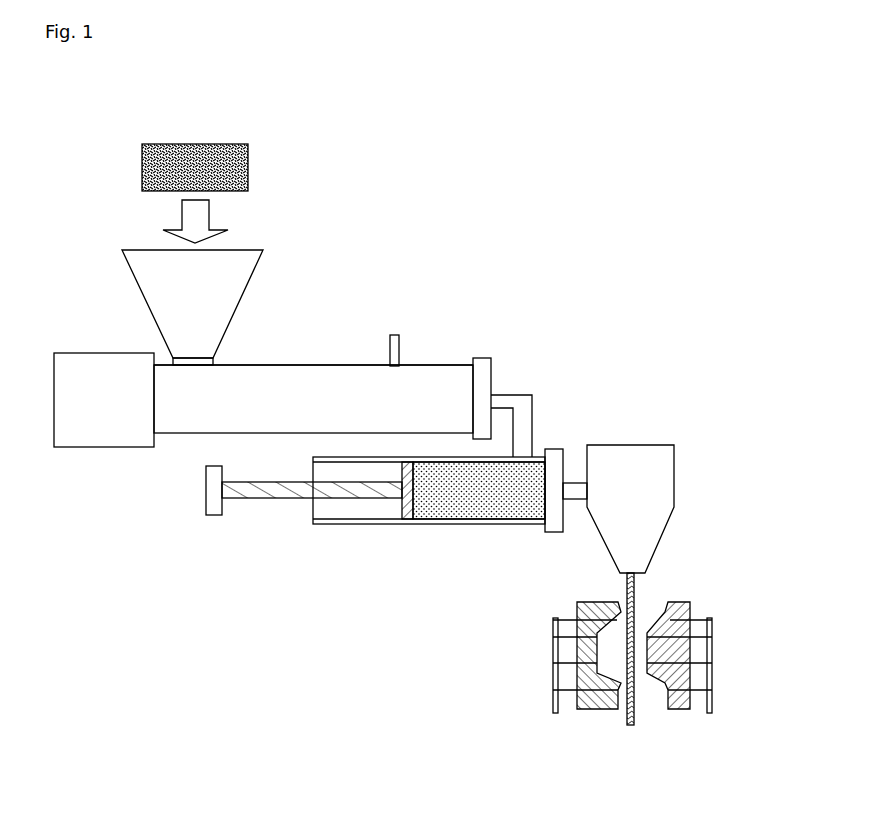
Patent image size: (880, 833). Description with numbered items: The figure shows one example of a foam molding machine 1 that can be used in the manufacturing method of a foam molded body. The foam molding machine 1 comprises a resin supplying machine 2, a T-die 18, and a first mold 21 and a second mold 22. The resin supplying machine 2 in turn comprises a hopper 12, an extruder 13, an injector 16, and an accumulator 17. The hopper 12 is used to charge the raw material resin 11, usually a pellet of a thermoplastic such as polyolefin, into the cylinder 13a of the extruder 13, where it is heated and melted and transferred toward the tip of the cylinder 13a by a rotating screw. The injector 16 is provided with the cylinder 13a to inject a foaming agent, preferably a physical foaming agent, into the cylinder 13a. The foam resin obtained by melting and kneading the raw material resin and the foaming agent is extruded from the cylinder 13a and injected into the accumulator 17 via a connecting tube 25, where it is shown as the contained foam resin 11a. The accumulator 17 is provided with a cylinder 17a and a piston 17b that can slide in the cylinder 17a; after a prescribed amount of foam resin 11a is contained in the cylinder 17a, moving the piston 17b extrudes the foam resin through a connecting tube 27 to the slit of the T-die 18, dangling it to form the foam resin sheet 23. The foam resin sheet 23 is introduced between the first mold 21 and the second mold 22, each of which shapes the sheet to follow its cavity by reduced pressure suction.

The foam molding machine 1 is at (621, 88).
The resin supplying machine 2 is at (391, 251).
The raw material resin 11 is at (240, 163).
The kneaded material 11a is at (490, 500).
The hopper 12 is at (143, 269).
The extruder 13 is at (276, 333).
The cylinder 13a is at (307, 365).
The injector 16 is at (399, 340).
The accumulator 17 is at (384, 549).
The cylinder 17a is at (350, 525).
The piston 17b is at (260, 490).
The T-die 18 is at (637, 445).
The first mold 21 is at (600, 710).
The second mold 22 is at (685, 710).
The foam resin sheet 23 is at (634, 580).
The connecting tube 25 is at (510, 393).
The connecting tube 27 is at (578, 483).